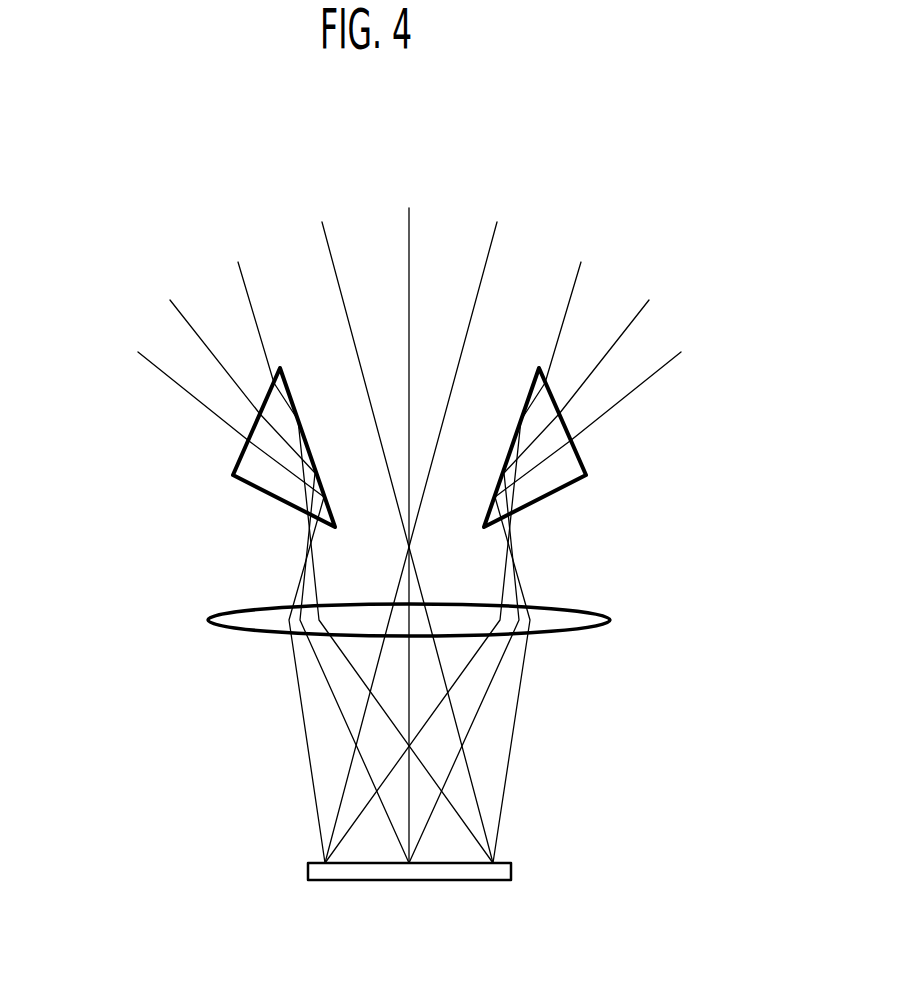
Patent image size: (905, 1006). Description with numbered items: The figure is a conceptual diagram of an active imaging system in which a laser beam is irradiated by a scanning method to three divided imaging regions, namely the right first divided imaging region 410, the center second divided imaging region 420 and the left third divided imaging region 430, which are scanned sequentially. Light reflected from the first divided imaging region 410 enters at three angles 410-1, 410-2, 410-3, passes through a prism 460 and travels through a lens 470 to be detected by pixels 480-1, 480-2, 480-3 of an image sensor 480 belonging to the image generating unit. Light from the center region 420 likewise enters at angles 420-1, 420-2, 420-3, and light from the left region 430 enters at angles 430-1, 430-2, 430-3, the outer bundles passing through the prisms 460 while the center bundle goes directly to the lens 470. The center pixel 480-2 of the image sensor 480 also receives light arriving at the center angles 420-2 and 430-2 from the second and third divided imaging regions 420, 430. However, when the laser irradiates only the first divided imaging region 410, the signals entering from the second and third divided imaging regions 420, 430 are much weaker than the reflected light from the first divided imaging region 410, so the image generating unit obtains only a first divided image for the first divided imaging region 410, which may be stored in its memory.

The first divided imaging region 410 is at (782, 207).
The first angle of light from first divided imaging region 410-1 is at (574, 288).
The second angle of light from first divided imaging region 410-2 is at (630, 324).
The third angle of light from first divided imaging region 410-3 is at (667, 360).
The second divided imaging region 420 is at (507, 130).
The first angle of light from second divided imaging region 420-1 is at (330, 253).
The center angle of light from second divided imaging region 420-2 is at (409, 248).
The third angle of light from second divided imaging region 420-3 is at (488, 253).
The third divided imaging region 430 is at (267, 207).
The first angle of light from third divided imaging region 430-1 is at (149, 360).
The center angle of light from third divided imaging region 430-2 is at (193, 327).
The third angle of light from third divided imaging region 430-3 is at (245, 285).
The prism 460 is at (589, 475).
The lens 470 is at (610, 620).
The image sensor 480 is at (511, 868).
The pixel 480-1 is at (325, 886).
The center pixel 480-2 is at (409, 886).
The pixel 480-3 is at (493, 886).